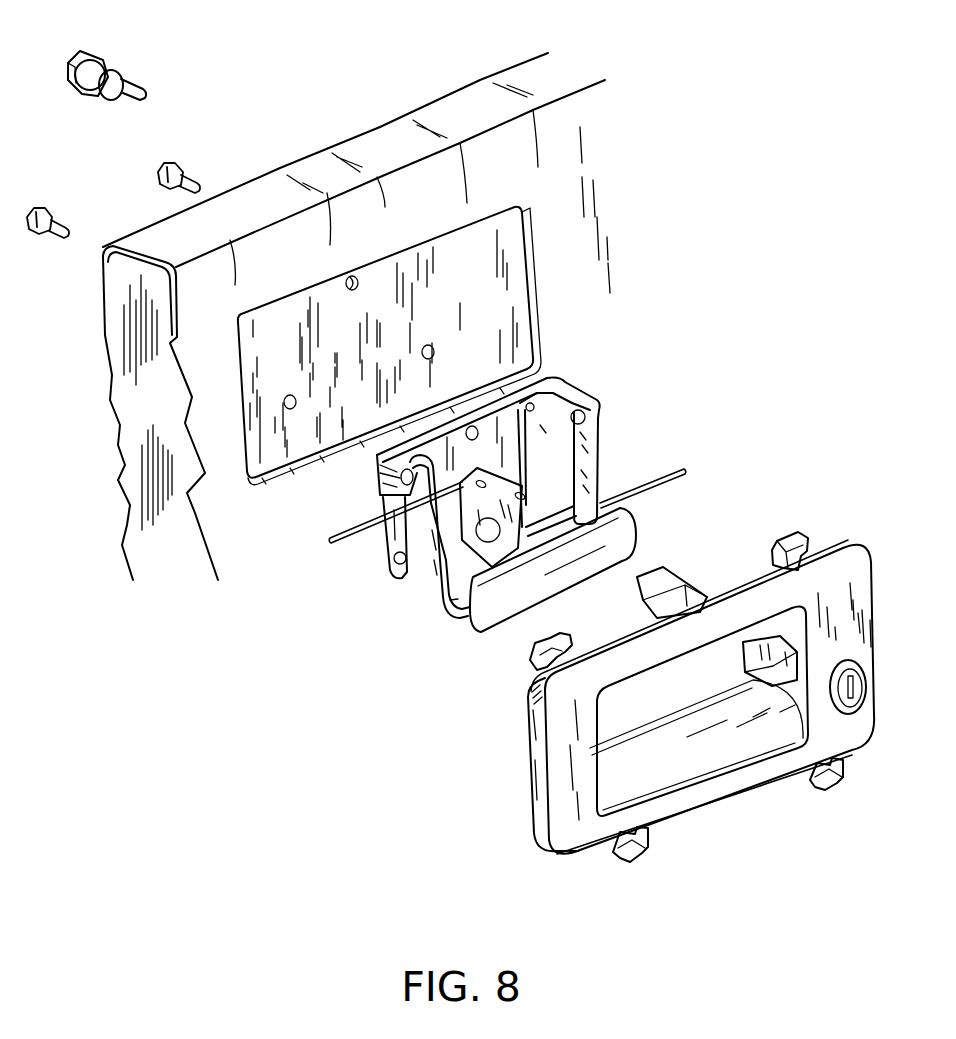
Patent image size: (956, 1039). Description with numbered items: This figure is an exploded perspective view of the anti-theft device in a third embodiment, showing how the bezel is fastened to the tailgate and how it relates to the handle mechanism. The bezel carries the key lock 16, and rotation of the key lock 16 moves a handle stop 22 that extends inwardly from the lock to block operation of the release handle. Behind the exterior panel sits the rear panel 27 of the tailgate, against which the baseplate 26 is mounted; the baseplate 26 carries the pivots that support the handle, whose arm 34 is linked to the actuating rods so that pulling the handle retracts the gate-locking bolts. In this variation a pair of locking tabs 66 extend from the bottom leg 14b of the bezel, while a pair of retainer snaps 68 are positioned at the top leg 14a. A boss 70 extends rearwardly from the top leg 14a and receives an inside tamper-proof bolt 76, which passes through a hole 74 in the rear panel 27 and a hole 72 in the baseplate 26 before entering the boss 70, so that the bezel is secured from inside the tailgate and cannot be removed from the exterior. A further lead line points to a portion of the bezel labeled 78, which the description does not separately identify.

The top leg 14a is at (730, 612).
The bottom leg 14b is at (717, 798).
The key lock 16 is at (841, 708).
The handle stop 22 is at (745, 662).
The baseplate 26 is at (395, 537).
The rear panel 27 is at (293, 336).
The arm 34 is at (587, 480).
The locking tabs 66 is at (637, 860).
The retainer snaps 68 is at (800, 540).
The boss 70 is at (670, 580).
The hole 72 is at (471, 426).
The hole 74 is at (352, 276).
The inside tamper-proof bolt 76 is at (86, 53).
The flange 78 is at (573, 836).